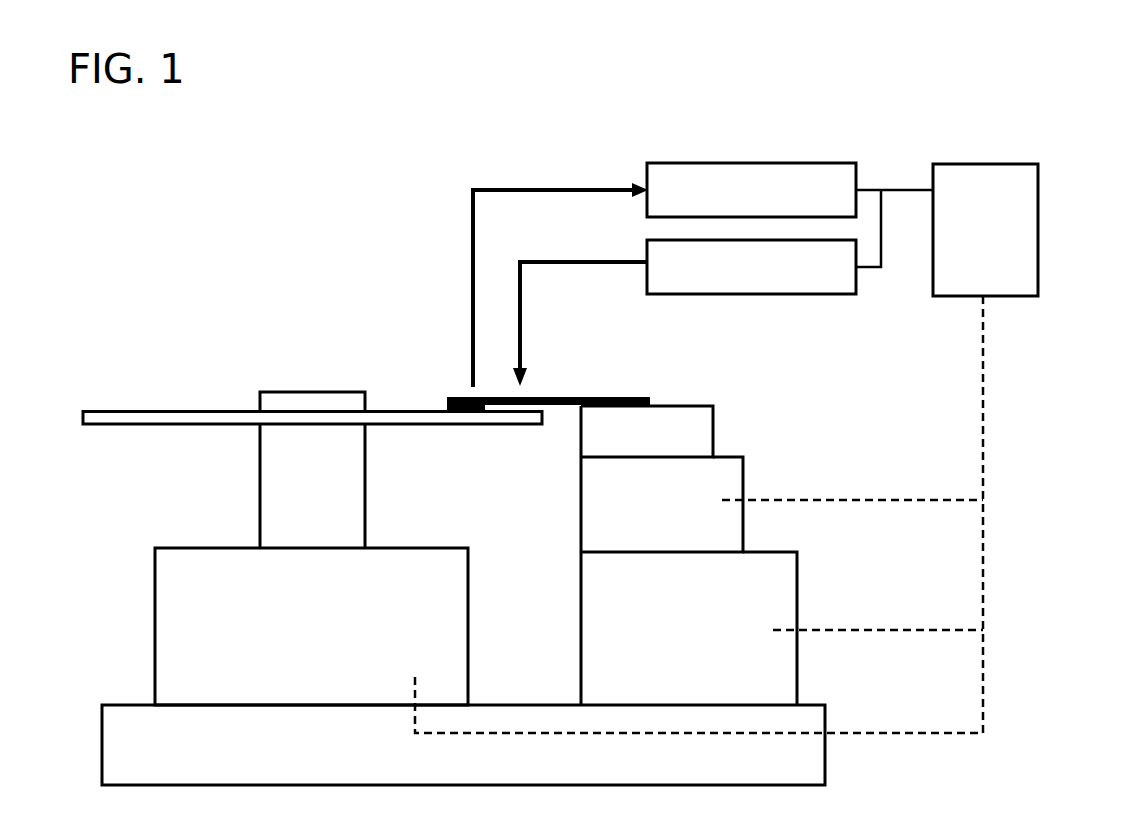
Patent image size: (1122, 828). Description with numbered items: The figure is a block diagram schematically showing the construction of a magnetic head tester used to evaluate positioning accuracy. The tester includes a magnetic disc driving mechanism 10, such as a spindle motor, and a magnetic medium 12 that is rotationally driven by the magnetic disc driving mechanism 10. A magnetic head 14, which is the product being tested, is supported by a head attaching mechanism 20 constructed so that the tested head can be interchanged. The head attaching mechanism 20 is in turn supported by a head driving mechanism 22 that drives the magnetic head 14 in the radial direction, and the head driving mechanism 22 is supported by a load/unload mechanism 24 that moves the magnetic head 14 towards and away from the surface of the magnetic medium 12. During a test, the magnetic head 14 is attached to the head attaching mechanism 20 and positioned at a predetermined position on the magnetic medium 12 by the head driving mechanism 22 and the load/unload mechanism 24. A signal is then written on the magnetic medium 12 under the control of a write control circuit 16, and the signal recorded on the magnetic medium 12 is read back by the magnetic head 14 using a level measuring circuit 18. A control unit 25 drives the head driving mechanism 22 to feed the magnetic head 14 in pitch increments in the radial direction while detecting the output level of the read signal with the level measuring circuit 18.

The magnetic disc driving mechanism 10 is at (170, 632).
The magnetic medium 12 is at (175, 415).
The magnetic head 14 is at (535, 397).
The write control circuit 16 is at (745, 295).
The level measuring circuit 18 is at (733, 163).
The head attaching mechanism 20 is at (705, 433).
The head driving mechanism 22 is at (737, 531).
The load/unload mechanism 24 is at (788, 678).
The control unit 25 is at (1023, 297).